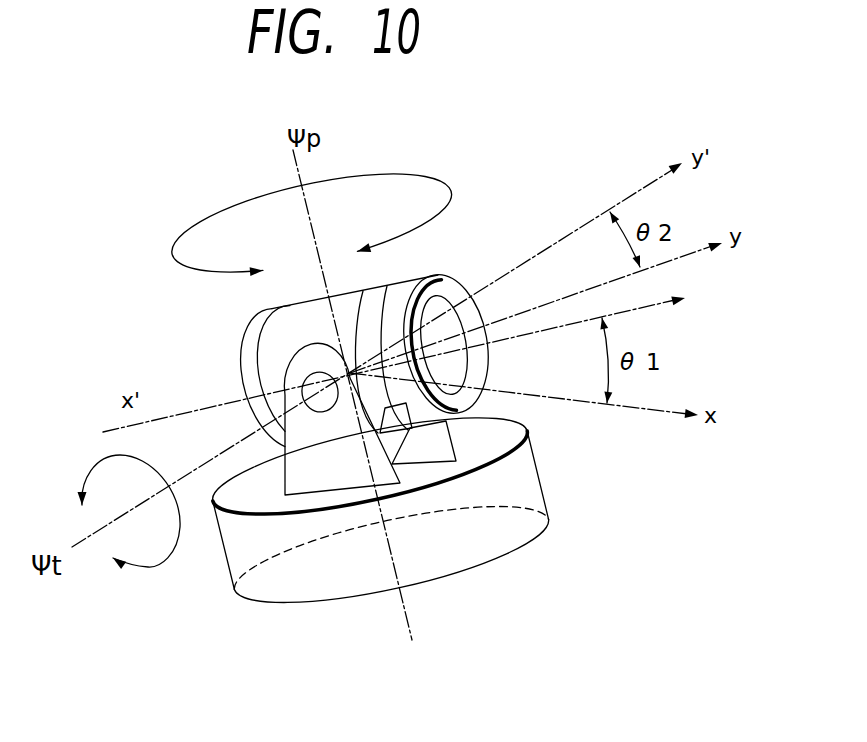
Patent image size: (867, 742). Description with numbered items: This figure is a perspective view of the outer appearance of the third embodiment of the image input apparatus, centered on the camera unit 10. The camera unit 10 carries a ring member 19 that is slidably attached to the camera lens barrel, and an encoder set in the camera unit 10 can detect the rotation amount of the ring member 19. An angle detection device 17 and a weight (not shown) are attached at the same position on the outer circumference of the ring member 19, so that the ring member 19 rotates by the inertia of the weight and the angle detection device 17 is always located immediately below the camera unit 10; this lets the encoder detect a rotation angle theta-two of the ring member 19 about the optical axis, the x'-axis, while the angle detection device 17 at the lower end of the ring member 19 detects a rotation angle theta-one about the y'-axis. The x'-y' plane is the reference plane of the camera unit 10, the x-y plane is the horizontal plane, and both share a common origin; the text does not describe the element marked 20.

The camera unit 10 is at (450, 280).
The angle detection device 17 is at (410, 424).
The ring member 19 is at (365, 324).
The pan base 20 is at (470, 565).